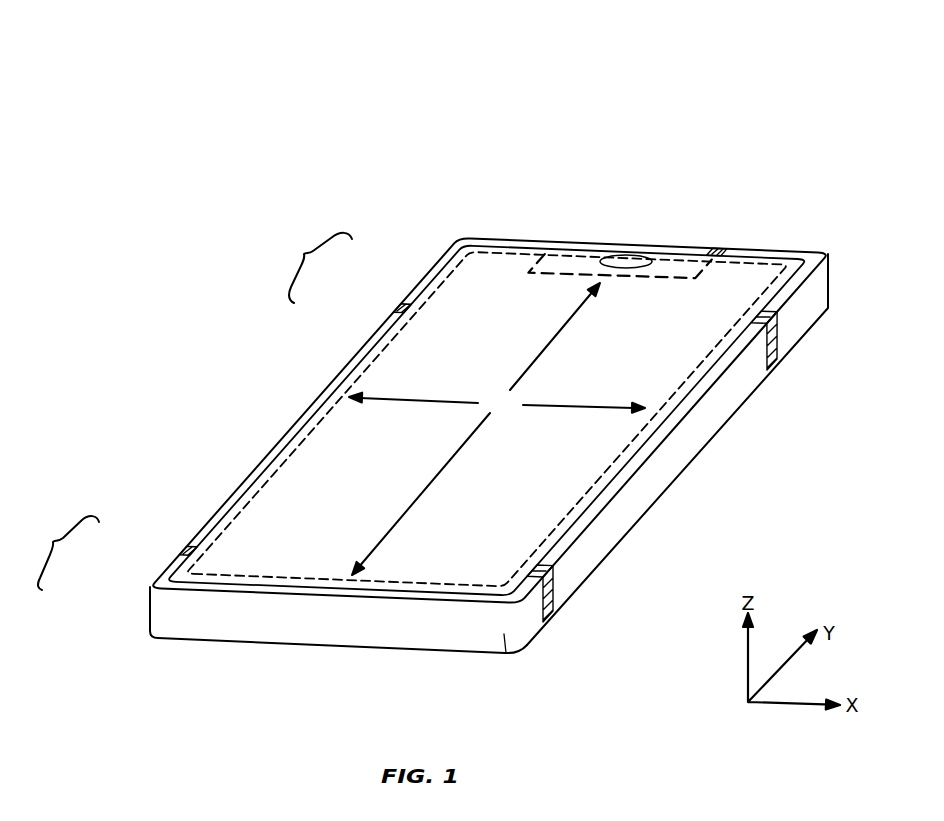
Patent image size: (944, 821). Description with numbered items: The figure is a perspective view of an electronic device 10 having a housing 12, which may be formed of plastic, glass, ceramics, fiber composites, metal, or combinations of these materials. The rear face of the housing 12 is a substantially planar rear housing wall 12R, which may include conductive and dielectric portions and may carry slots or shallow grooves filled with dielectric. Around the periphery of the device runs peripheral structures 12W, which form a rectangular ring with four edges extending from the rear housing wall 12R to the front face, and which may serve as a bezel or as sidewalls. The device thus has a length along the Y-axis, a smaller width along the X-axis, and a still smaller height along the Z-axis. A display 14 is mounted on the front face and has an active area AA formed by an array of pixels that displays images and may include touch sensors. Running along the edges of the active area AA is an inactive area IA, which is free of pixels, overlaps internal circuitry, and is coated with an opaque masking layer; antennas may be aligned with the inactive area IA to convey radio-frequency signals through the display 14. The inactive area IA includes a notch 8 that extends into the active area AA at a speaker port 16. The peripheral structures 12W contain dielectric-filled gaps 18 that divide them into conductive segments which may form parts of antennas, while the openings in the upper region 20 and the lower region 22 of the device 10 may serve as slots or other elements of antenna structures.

The electronic device 10 is at (482, 70).
The housing 12 is at (830, 281).
The peripheral structures 12W is at (634, 502).
The rear housing wall 12R is at (325, 653).
The display 14 is at (495, 272).
The notch 8 is at (574, 258).
The speaker port 16 is at (632, 256).
The gaps 18 is at (721, 247).
The inactive area IA is at (769, 260).
The active area AA is at (497, 429).
The upper region 20 is at (318, 265).
The lower region 22 is at (61, 551).